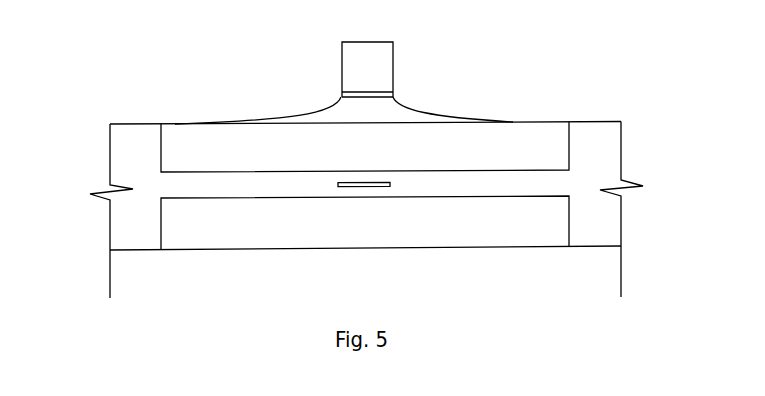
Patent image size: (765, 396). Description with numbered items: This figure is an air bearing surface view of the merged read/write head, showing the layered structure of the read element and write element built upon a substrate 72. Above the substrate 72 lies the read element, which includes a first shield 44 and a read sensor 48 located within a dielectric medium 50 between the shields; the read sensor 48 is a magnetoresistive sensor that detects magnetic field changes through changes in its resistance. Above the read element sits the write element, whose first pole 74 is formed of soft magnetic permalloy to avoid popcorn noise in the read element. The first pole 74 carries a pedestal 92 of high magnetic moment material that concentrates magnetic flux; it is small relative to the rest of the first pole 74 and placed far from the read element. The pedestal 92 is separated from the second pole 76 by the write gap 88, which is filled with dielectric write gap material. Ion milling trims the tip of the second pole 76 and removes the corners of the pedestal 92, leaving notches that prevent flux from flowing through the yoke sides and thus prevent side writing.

The dielectric medium 50 is at (580, 181).
The substrate 72 is at (578, 280).
The first pole 74 is at (461, 154).
The first shield 44 is at (463, 232).
The read sensor 48 is at (338, 184).
The pedestal 92 is at (413, 116).
The write gap 88 is at (380, 93).
The second pole 76 is at (366, 62).